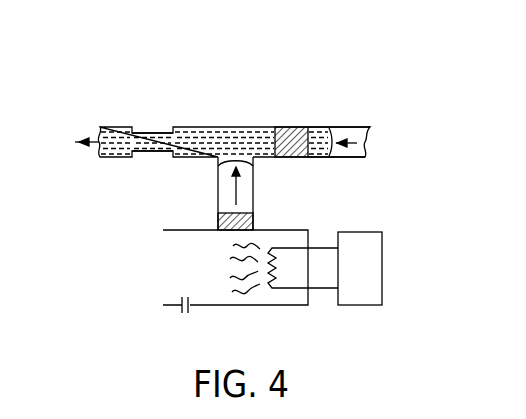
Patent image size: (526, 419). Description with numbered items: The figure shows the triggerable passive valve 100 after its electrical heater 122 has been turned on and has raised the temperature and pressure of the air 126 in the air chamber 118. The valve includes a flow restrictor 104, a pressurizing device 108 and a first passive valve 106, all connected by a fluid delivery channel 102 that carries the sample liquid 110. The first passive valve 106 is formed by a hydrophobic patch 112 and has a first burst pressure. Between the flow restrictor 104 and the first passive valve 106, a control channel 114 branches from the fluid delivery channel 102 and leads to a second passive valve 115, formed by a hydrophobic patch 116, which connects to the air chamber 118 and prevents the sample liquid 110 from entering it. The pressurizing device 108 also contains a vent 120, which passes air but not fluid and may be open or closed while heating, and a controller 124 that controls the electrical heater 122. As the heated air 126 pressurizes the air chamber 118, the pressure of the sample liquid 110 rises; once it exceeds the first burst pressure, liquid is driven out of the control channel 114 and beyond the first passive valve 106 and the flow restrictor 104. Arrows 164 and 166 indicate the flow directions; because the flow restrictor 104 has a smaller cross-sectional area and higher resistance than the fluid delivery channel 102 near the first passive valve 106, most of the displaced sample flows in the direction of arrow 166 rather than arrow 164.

The triggerable passive valve 100 is at (352, 81).
The fluid delivery channel 102 is at (189, 127).
The flow restrictor 104 is at (150, 153).
The first passive valve 106 is at (304, 127).
The pressurizing device 108 is at (150, 225).
The sample liquid 110 is at (226, 127).
The hydrophobic patch 112 is at (289, 127).
The control channel 114 is at (257, 176).
The second passive valve 115 is at (211, 220).
The hydrophobic patch 116 is at (255, 214).
The air chamber 118 is at (295, 305).
The vent 120 is at (180, 310).
The electrical heater 122 is at (282, 288).
The controller 124 is at (360, 268).
The air 126 is at (177, 278).
The arrow 164 is at (82, 140).
The arrow 166 is at (347, 146).